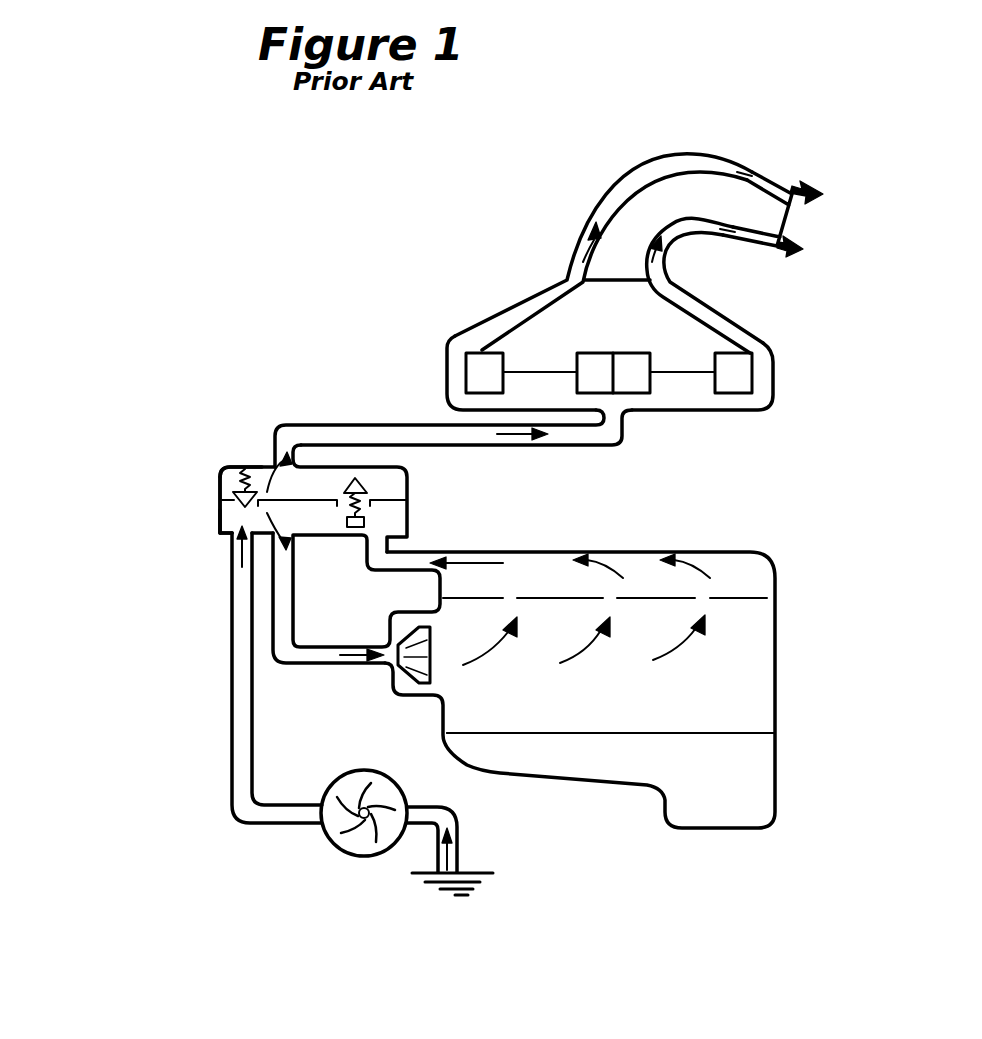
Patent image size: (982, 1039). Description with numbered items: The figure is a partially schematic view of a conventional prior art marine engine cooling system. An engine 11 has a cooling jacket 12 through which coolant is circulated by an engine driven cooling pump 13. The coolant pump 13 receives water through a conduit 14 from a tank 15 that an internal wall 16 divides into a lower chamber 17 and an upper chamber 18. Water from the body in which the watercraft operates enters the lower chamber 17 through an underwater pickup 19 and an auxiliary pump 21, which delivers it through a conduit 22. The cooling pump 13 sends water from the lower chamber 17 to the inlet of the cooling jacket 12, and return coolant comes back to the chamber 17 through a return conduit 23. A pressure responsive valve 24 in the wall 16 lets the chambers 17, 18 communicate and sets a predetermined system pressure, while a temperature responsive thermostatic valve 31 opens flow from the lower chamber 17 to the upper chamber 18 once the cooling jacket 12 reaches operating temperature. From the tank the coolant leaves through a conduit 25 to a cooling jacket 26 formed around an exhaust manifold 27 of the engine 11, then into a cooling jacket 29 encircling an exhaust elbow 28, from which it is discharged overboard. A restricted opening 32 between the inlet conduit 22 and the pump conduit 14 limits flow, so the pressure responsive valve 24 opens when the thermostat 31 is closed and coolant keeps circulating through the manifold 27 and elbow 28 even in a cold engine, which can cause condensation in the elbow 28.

The engine 11 is at (797, 559).
The cooling jacket 12 is at (763, 655).
The cooling pump 13 is at (408, 686).
The conduit 14 is at (326, 621).
The tank 15 is at (218, 512).
The internal wall 16 is at (227, 472).
The lower chamber 17 is at (227, 538).
The upper chamber 18 is at (321, 475).
The underwater pickup 19 is at (464, 843).
The auxiliary pump 21 is at (332, 838).
The conduit 22 is at (233, 712).
The return conduit 23 is at (384, 557).
The pressure responsive valve 24 is at (257, 492).
The conduit 25 is at (440, 427).
The cooling jacket 26 is at (470, 341).
The exhaust manifold 27 is at (699, 327).
The exhaust elbow 28 is at (710, 190).
The cooling jacket 29 is at (633, 146).
The thermostatic valve 31 is at (362, 484).
The restricted opening 32 is at (274, 546).